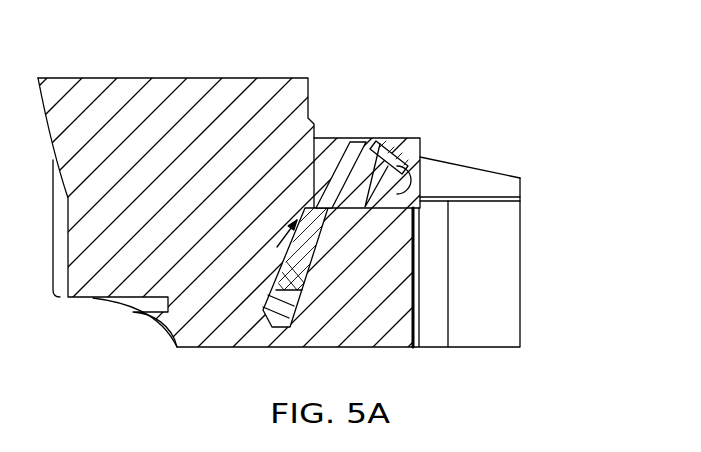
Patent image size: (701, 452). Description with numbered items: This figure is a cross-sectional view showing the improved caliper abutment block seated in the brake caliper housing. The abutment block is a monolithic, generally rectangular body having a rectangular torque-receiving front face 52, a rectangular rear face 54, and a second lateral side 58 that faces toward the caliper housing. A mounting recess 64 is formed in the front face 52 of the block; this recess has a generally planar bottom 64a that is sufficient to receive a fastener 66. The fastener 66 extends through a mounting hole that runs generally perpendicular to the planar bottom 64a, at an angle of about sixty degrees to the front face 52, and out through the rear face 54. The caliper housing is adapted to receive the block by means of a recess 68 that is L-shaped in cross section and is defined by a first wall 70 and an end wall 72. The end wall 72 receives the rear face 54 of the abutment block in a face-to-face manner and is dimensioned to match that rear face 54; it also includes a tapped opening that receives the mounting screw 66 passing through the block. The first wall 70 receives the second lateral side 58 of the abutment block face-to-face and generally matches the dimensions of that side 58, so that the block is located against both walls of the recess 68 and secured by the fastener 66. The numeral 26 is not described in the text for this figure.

The housing 26 is at (97, 90).
The torque-receiving front face 52 is at (328, 138).
The rear face 54 is at (413, 257).
The second lateral side 58 is at (313, 185).
The mounting recess 64 is at (413, 148).
The planar bottom 64a is at (352, 140).
The fastener 66 is at (413, 173).
The recess 68 is at (317, 185).
The first wall 70 is at (317, 142).
The end wall 72 is at (420, 196).